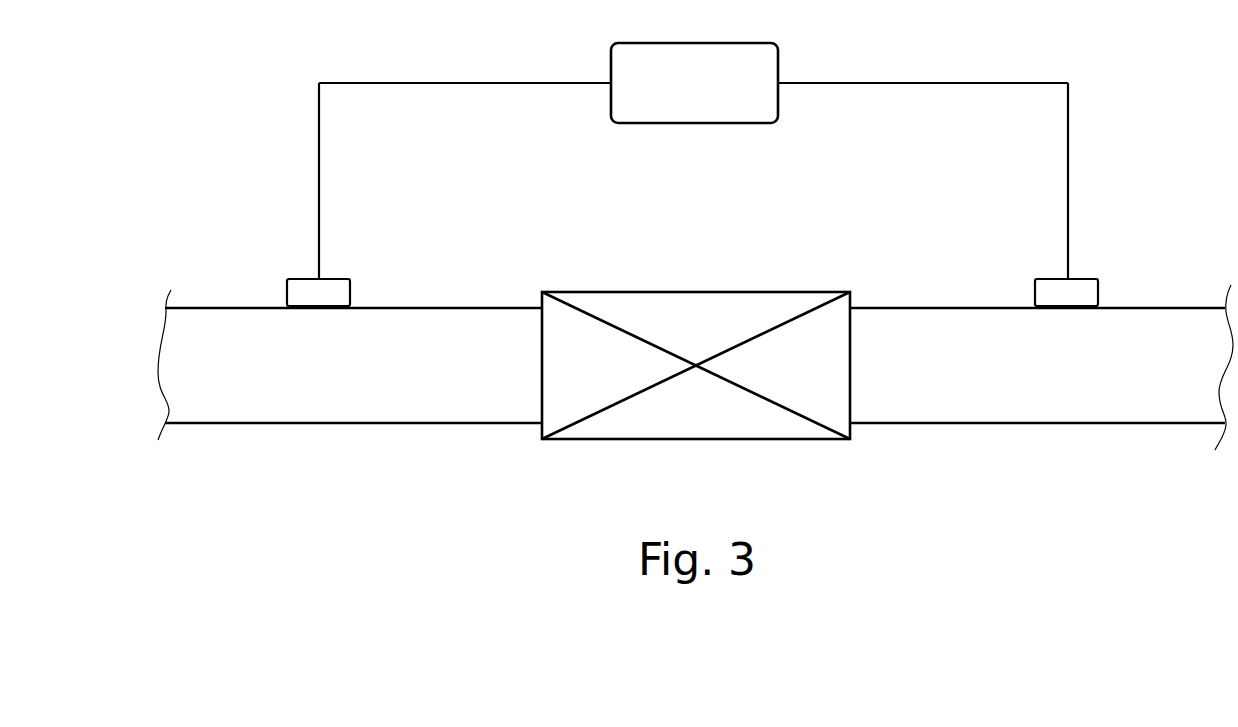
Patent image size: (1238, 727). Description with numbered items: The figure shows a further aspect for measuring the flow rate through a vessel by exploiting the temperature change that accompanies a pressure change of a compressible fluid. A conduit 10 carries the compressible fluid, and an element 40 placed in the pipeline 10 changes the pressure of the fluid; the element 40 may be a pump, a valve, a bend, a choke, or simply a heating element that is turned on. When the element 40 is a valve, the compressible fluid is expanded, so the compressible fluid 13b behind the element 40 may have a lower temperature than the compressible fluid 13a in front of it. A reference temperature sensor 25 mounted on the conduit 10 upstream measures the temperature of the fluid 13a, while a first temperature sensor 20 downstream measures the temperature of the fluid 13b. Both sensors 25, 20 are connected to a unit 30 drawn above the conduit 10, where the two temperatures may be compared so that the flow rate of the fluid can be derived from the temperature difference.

The conduit 10 is at (1092, 406).
The compressible fluid in front of the valve 13a is at (458, 362).
The compressible fluid behind the valve 13b is at (1038, 362).
The first temperature sensor 20 is at (1066, 195).
The reference temperature sensor 25 is at (318, 195).
The controller 30 is at (693, 83).
The element 40 is at (696, 365).